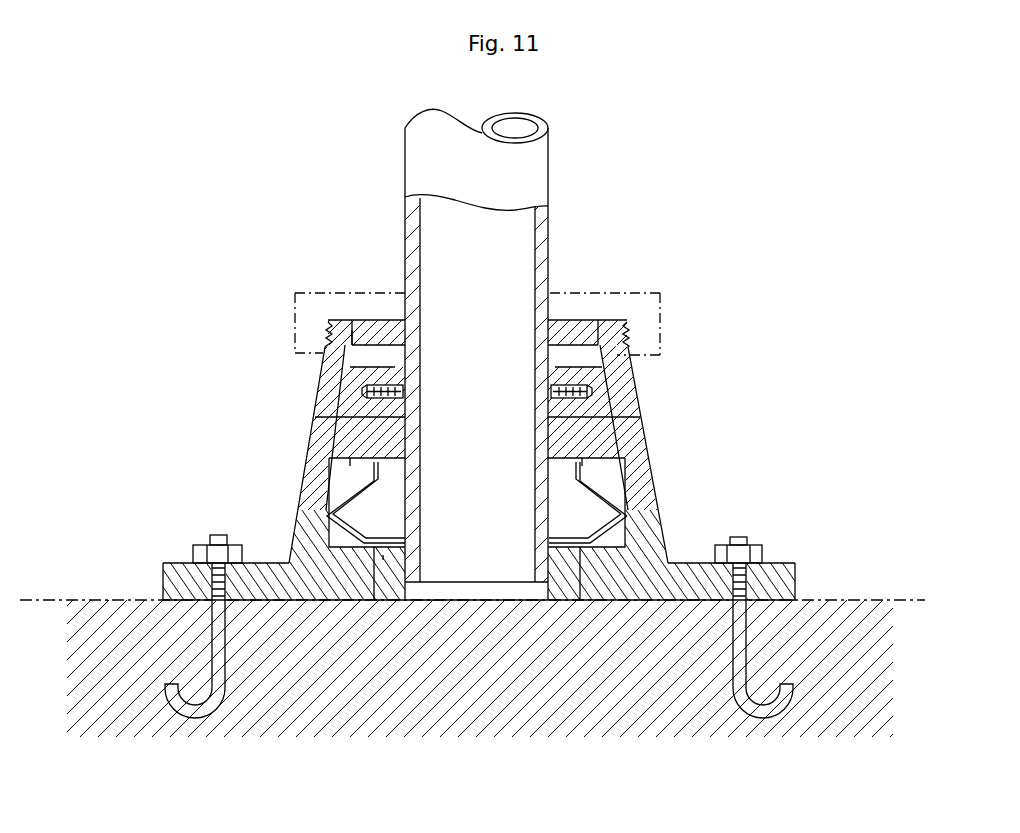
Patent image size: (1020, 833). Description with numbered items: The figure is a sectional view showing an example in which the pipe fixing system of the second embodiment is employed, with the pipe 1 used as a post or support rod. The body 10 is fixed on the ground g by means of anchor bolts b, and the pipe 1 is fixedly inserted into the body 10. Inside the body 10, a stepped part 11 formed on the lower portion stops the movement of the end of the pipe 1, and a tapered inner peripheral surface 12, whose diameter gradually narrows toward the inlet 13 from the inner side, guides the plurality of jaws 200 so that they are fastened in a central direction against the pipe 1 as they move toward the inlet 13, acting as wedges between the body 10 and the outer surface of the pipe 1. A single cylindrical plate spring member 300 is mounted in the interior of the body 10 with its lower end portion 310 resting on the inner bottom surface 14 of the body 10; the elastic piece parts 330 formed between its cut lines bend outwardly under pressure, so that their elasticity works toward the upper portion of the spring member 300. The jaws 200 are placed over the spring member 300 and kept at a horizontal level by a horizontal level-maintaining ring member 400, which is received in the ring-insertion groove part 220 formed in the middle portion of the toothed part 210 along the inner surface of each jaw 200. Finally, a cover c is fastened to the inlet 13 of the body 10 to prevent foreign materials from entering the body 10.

The pipe 1 is at (540, 163).
The body 10 is at (300, 533).
The stepped part 11 is at (413, 572).
The tapered inner peripheral surface 12 is at (325, 470).
The inlet 13 is at (380, 338).
The inner bottom surface 14 is at (388, 555).
The jaws 200 is at (325, 385).
The toothed part 210 is at (345, 416).
The ring-insertion groove part 220 is at (362, 392).
The single cylindrical plate spring member 300 is at (622, 485).
The lower end portion 310 is at (581, 555).
The elastic piece part 330 is at (628, 506).
The horizontal level-maintaining ring member 400 is at (366, 338).
The anchor bolts b is at (220, 705).
The cover c is at (645, 300).
The ground g is at (108, 716).